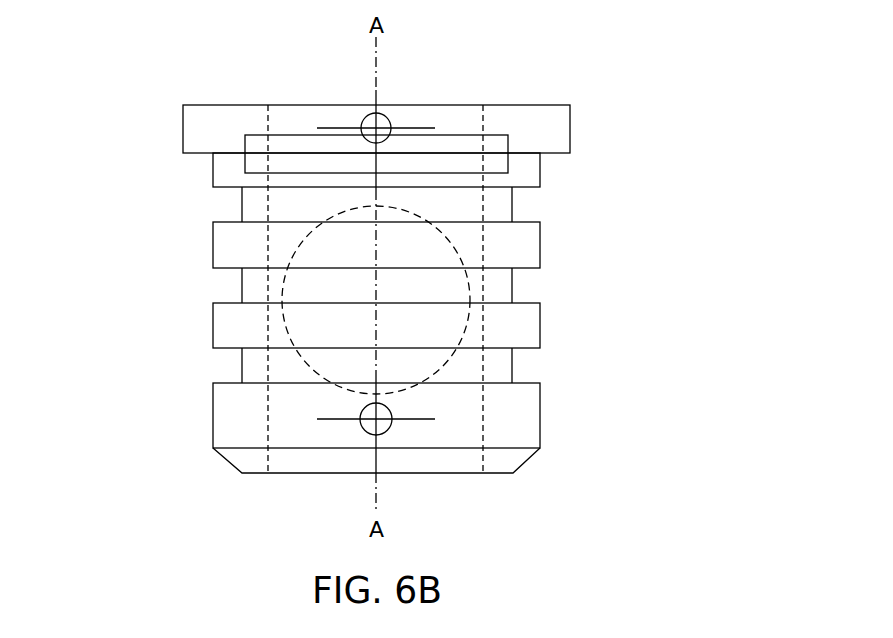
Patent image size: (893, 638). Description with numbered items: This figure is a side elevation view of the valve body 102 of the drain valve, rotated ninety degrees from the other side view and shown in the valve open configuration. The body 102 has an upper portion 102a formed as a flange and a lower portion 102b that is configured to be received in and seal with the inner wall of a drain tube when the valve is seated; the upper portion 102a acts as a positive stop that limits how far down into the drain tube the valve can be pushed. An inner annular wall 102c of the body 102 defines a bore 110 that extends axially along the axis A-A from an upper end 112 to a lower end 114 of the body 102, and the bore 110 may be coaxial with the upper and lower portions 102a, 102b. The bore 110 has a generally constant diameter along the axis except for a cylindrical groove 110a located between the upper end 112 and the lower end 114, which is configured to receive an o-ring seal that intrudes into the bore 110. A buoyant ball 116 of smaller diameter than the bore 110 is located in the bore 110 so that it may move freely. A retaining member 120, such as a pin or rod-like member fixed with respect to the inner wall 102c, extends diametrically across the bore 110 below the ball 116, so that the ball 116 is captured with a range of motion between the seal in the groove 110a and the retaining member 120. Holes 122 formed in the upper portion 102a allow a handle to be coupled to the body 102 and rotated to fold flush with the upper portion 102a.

The body 102 is at (641, 165).
The upper portion 102a is at (115, 105).
The lower portion 102b is at (115, 158).
The inner annular wall 102c is at (484, 195).
The bore 110 is at (310, 121).
The cylindrical groove 110a is at (251, 161).
The upper end 112 is at (484, 105).
The lower end 114 is at (483, 474).
The buoyant ball 116 is at (455, 363).
The retaining member 120 is at (362, 427).
The holes 122 is at (392, 124).